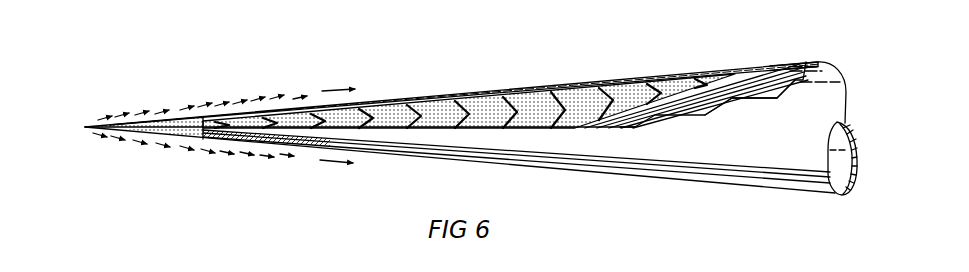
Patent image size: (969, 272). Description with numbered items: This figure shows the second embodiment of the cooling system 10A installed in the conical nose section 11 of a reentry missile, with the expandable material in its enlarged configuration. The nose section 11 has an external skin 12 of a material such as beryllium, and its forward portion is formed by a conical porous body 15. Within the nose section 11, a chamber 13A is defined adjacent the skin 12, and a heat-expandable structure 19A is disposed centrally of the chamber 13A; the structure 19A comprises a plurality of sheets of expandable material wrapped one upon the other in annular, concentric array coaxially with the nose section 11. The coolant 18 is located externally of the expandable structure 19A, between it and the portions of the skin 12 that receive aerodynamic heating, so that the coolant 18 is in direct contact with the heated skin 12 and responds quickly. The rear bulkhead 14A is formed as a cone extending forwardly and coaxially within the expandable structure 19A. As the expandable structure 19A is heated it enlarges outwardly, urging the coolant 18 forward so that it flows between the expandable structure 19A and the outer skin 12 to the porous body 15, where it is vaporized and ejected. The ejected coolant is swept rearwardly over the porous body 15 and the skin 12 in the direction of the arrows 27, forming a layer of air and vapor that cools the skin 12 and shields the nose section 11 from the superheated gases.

The cooling system 10A is at (707, 49).
The nose section 11 is at (819, 52).
The external skin 12 is at (452, 95).
The coolant 18 is at (543, 92).
The expandable structure 19A is at (633, 86).
The rear bulkhead 14A is at (618, 125).
The chamber 13A is at (740, 76).
The arrows 27 is at (284, 99).
The porous body 15 is at (156, 131).